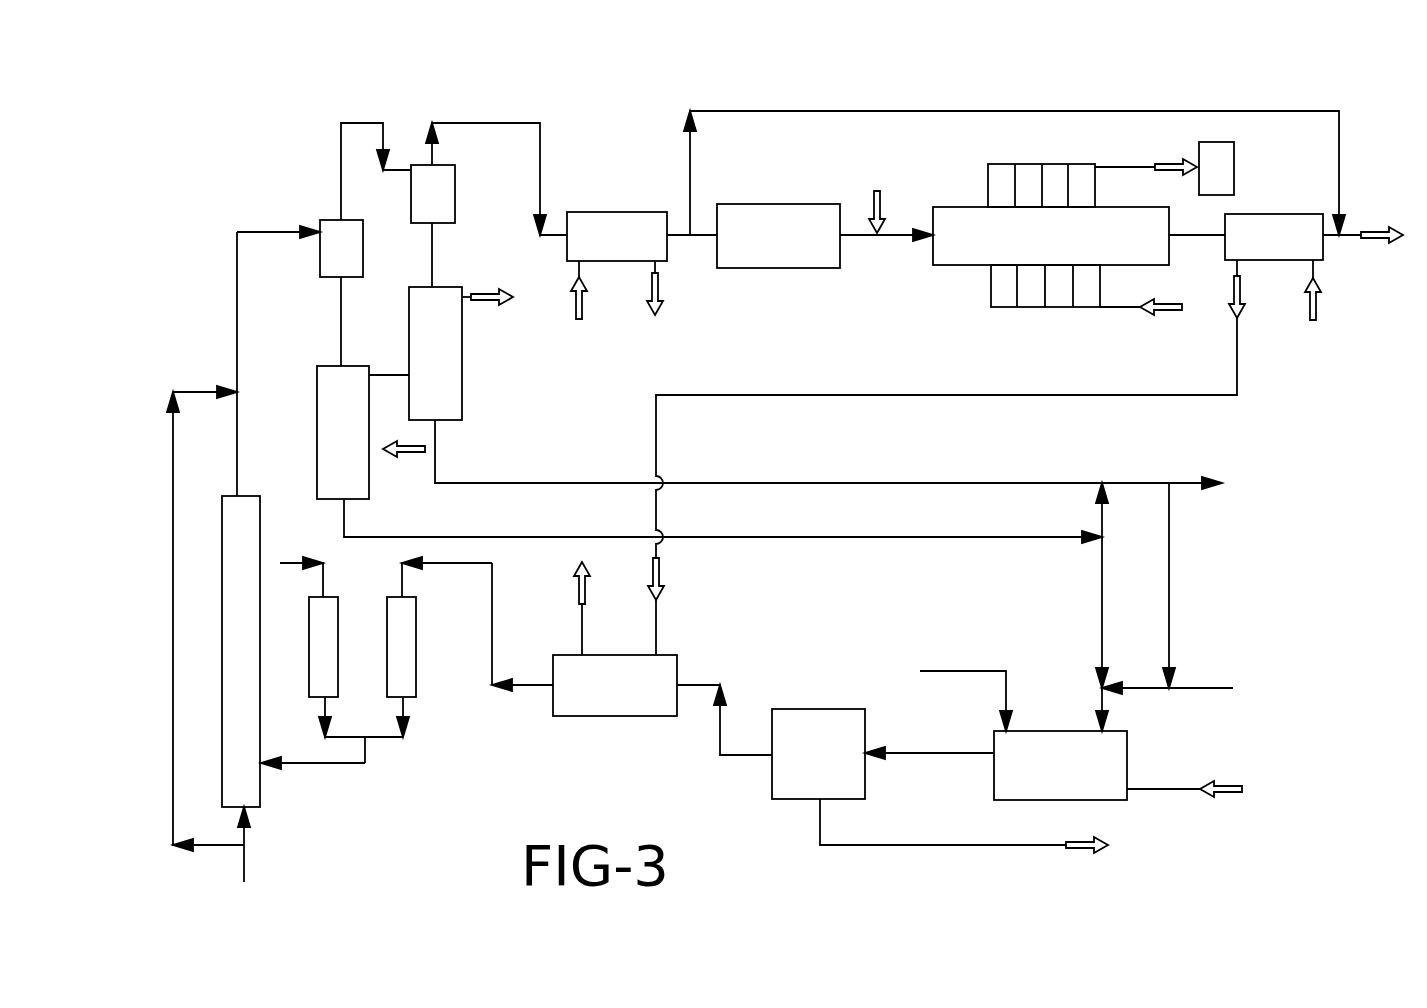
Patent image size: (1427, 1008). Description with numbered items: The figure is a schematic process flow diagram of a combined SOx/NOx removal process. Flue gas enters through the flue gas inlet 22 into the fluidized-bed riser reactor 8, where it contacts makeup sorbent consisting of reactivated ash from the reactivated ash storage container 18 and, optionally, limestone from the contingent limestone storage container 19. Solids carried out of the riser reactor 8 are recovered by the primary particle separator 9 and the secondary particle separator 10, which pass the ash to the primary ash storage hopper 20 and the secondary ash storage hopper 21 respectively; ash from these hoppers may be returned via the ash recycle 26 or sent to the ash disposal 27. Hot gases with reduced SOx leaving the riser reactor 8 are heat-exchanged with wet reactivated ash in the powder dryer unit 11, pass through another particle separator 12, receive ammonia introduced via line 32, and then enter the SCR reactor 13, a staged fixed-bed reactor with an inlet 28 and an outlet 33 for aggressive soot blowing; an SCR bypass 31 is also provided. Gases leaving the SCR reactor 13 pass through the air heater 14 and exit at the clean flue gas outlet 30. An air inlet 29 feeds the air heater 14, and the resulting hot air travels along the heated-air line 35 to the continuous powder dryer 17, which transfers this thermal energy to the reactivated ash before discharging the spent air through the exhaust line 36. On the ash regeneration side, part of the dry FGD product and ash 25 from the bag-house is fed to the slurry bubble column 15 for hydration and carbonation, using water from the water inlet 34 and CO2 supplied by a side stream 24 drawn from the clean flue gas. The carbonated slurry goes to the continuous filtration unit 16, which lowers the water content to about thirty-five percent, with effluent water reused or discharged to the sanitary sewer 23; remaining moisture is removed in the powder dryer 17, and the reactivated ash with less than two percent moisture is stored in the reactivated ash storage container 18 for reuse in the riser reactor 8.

The fluidized-bed riser reactor 8 is at (250, 787).
The primary particle separator 9 is at (336, 228).
The secondary particle separator 10 is at (446, 200).
The powder dryer unit 11 is at (617, 228).
The particle separator 12 is at (780, 245).
The SCR reactor 13 is at (962, 253).
The air heater 14 is at (1283, 228).
The slurry bubble column 15 is at (1098, 780).
The continuous filtration unit 16 is at (818, 727).
The continuous powder dryer 17 is at (623, 698).
The reactivated ash storage container 18 is at (410, 663).
The contingent limestone storage container 19 is at (330, 680).
The primary ash storage hopper 20 is at (330, 440).
The secondary ash storage hopper 21 is at (447, 360).
The flue gas inlet 22 is at (245, 862).
The sanitary sewer 23 is at (1080, 850).
The side stream 24 is at (1242, 785).
The dry FGD product and ash 25 is at (1205, 688).
The ash recycle 26 is at (1170, 575).
The ash disposal 27 is at (1215, 490).
The inlet 28 is at (1165, 310).
The air inlet 29 is at (1313, 310).
The clean flue gas outlet 30 is at (1372, 240).
The SCR bypass 31 is at (930, 106).
The ammonia line 32 is at (876, 200).
The outlet 33 is at (1225, 172).
The water inlet 34 is at (943, 671).
The heated-air line 35 is at (1195, 397).
The exhaust line 36 is at (580, 638).